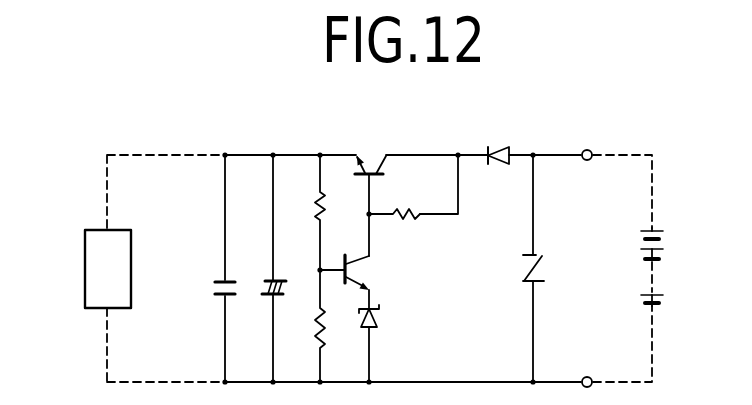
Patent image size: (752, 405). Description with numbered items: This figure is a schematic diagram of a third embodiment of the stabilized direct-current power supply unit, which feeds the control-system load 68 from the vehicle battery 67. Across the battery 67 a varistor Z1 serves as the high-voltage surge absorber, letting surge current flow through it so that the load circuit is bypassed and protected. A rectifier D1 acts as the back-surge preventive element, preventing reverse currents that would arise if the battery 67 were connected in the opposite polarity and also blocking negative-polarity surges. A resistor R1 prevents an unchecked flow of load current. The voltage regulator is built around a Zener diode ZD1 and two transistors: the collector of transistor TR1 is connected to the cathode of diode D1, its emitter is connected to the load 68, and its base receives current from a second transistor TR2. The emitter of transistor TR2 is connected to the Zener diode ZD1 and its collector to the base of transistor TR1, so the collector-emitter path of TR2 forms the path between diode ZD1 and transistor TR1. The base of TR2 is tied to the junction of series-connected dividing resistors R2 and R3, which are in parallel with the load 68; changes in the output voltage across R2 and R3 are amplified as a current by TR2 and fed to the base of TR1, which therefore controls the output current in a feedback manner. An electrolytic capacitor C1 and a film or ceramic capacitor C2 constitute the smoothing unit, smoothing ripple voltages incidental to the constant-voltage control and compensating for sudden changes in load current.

The load 68 is at (85, 267).
The battery 67 is at (662, 253).
The film or ceramic capacitor C2 is at (217, 282).
The electrolytic capacitor C1 is at (268, 281).
The dividing resistor R2 is at (318, 216).
The dividing resistor R3 is at (318, 343).
The resistor R1 is at (407, 216).
The transistor TR1 is at (372, 155).
The second transistor TR2 is at (367, 270).
The Zener diode ZD1 is at (379, 321).
The rectifier D1 is at (505, 150).
The varistor Z1 is at (540, 266).